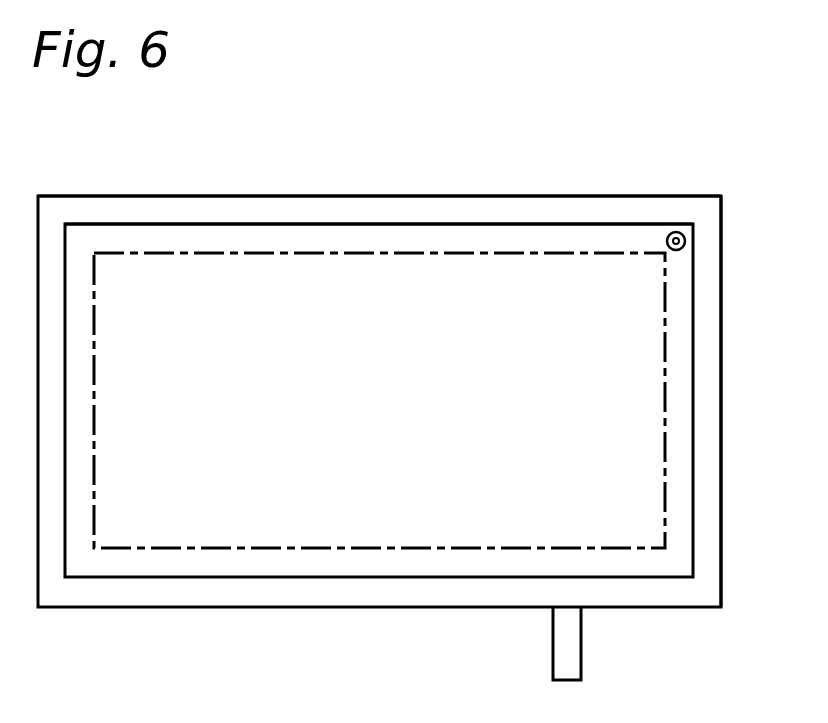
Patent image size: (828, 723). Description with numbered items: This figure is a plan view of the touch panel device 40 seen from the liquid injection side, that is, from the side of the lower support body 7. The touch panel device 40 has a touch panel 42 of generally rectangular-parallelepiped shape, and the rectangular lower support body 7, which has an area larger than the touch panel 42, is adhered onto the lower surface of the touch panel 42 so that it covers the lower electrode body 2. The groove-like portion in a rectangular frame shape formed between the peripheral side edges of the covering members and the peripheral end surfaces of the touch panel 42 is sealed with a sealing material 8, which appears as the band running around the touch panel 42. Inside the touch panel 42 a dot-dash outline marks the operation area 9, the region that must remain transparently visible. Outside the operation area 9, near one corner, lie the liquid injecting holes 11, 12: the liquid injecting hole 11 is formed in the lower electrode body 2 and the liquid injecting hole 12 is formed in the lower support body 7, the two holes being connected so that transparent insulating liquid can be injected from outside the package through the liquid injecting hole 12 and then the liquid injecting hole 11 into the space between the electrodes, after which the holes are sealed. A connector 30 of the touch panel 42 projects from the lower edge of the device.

The lower electrode body 2 is at (232, 241).
The lower support body 7 is at (512, 210).
The sealing material 8 is at (707, 493).
The operation area 9 is at (397, 552).
The liquid injecting hole 11 is at (672, 237).
The liquid injecting hole 12 is at (678, 233).
The connector 30 is at (568, 655).
The touch panel device 40 is at (736, 243).
The touch panel 42 is at (702, 373).